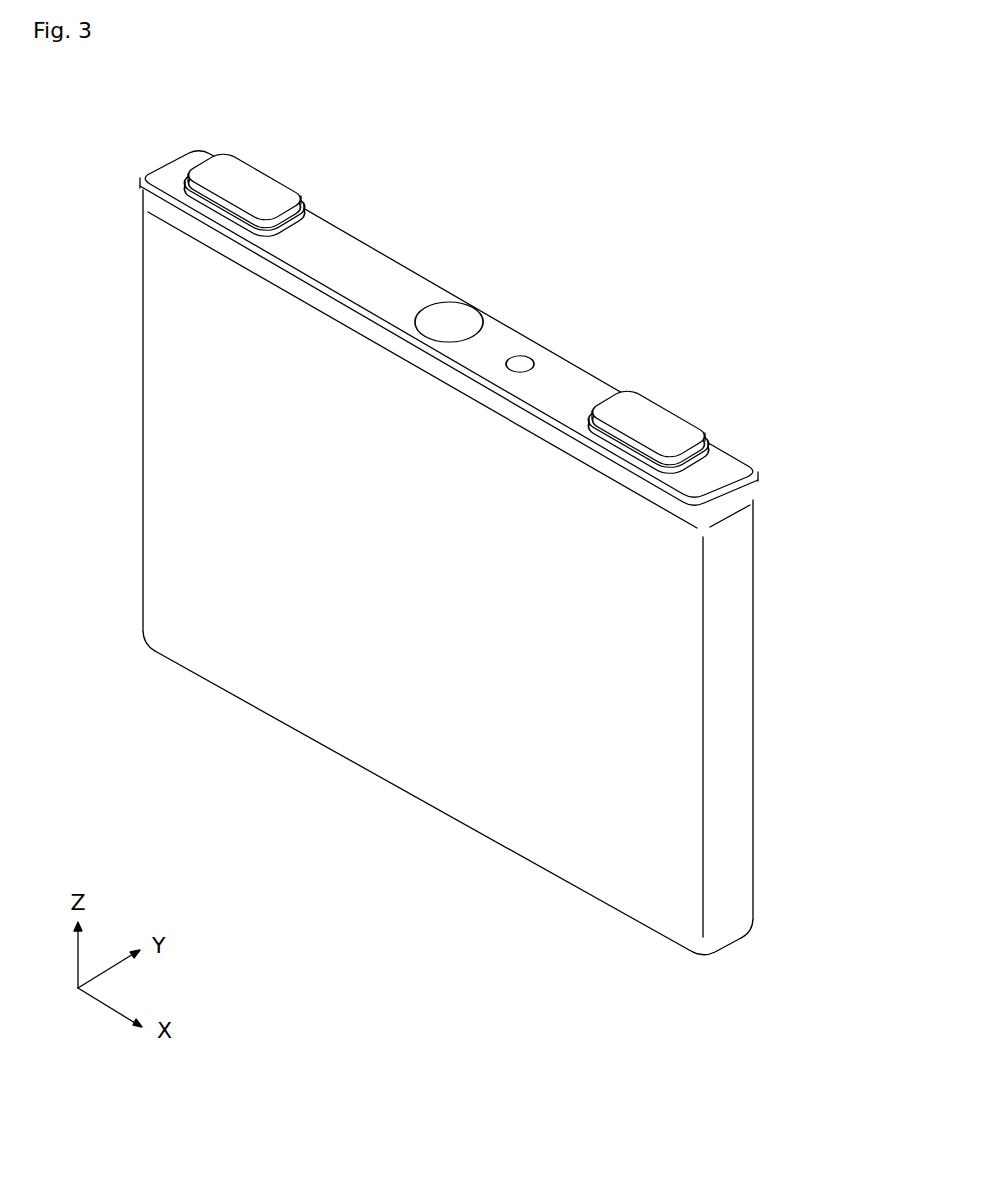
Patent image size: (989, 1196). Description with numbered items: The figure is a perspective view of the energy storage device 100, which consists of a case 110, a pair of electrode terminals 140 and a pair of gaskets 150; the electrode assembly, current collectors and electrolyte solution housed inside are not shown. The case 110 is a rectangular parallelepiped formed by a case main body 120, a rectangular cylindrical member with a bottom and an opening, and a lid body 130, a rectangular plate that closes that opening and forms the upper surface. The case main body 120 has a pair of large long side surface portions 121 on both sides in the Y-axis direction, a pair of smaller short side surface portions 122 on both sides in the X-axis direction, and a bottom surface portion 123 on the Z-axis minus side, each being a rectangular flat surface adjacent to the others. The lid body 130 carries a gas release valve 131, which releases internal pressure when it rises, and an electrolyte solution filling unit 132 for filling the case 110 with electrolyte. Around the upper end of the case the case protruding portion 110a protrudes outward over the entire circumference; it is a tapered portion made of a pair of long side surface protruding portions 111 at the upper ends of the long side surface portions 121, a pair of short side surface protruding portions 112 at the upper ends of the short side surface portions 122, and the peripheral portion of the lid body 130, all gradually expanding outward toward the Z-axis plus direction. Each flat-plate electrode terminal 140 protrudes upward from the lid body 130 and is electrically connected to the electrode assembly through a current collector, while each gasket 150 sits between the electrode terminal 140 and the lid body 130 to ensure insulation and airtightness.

The energy storage device 100 is at (702, 152).
The case 110 is at (229, 803).
The case protruding portion 110a is at (773, 481).
The long side surface protruding portion 111 is at (421, 267).
The short side surface protruding portion 112 is at (742, 501).
The case main body 120 is at (291, 740).
The long side surface portion 121 is at (757, 628).
The short side surface portion 122 is at (740, 706).
The bottom surface portion 123 is at (480, 829).
The lid body 130 is at (360, 252).
The gas release valve 131 is at (458, 303).
The electrolyte solution filling unit 132 is at (525, 354).
The electrode terminal 140 is at (254, 176).
The gasket 150 is at (307, 210).